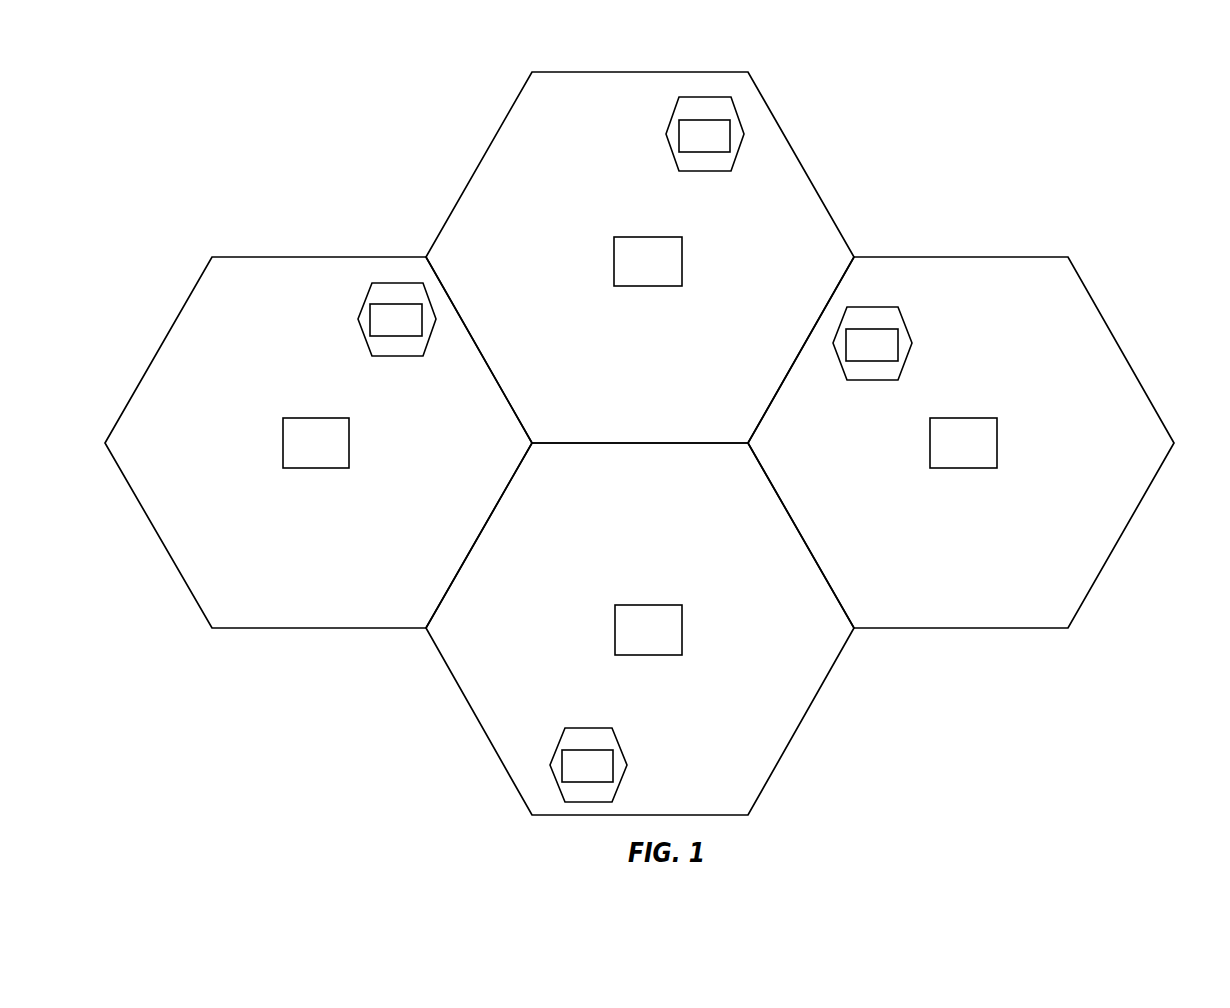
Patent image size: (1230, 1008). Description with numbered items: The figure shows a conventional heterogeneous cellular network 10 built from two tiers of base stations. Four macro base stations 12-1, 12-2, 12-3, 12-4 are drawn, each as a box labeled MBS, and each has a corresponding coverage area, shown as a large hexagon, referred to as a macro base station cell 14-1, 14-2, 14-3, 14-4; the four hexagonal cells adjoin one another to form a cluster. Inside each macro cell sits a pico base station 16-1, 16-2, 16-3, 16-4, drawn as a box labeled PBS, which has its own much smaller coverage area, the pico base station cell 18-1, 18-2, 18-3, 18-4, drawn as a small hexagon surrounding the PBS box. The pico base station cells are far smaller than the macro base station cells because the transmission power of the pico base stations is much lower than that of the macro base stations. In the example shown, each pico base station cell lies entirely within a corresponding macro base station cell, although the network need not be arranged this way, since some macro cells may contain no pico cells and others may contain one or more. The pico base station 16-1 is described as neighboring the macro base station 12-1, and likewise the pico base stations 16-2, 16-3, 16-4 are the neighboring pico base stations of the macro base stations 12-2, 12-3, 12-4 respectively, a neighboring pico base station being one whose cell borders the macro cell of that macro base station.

The heterogeneous cellular network 10 is at (1014, 87).
The macro base station 12-1 is at (682, 252).
The macro base station 12-2 is at (997, 430).
The macro base station 12-3 is at (682, 618).
The macro base station 12-4 is at (349, 433).
The macro base station cell 14-1 is at (798, 157).
The macro base station cell 14-2 is at (1110, 330).
The macro base station cell 14-3 is at (797, 727).
The macro base station cell 14-4 is at (170, 328).
The pico base station 16-1 is at (693, 120).
The pico base station 16-2 is at (880, 329).
The pico base station 16-3 is at (598, 750).
The pico base station 16-4 is at (387, 304).
The pico base station cell 18-1 is at (706, 171).
The pico base station cell 18-2 is at (883, 380).
The pico base station cell 18-3 is at (597, 728).
The pico base station cell 18-4 is at (388, 356).